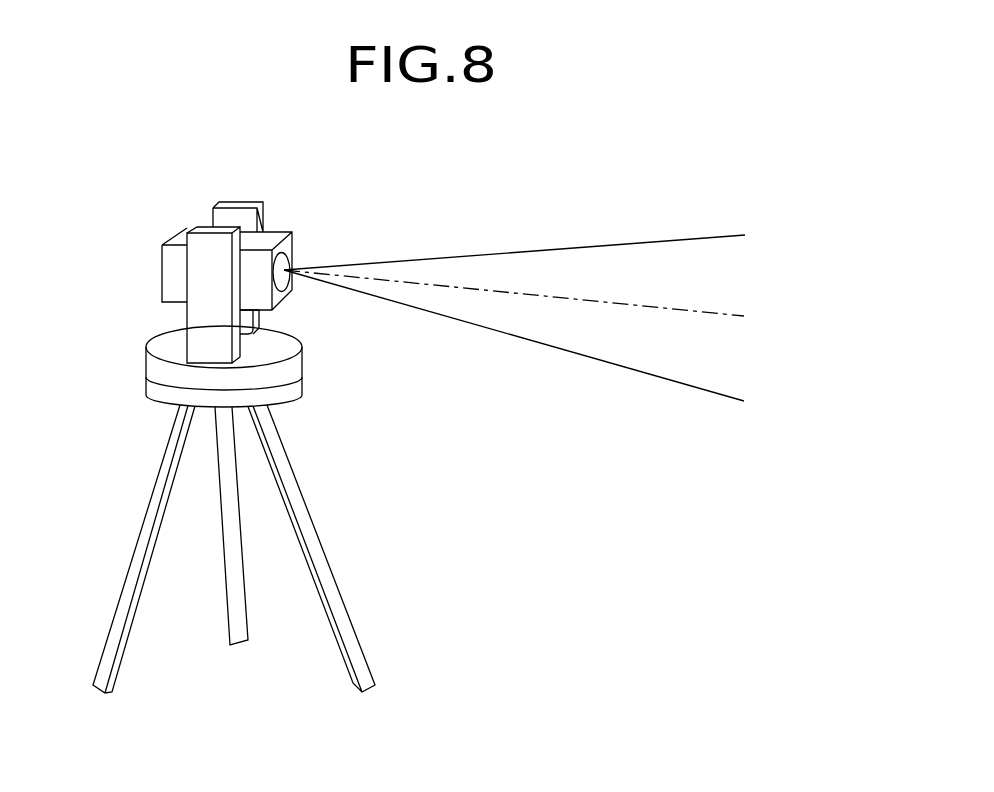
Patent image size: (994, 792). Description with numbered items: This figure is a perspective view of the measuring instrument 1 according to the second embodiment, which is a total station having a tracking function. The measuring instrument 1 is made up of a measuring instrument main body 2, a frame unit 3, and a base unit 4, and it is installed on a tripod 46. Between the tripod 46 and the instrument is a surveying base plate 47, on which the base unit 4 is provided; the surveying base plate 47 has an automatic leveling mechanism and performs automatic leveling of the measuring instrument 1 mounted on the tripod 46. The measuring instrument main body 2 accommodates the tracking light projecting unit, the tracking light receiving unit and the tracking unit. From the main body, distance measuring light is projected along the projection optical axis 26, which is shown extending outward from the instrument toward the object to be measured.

The measuring instrument 1 is at (180, 208).
The measuring instrument main body 2 is at (162, 276).
The frame unit 3 is at (247, 202).
The base unit 4 is at (302, 355).
The projection optical axis 26 is at (550, 298).
The tripod 46 is at (308, 517).
The surveying base plate 47 is at (303, 382).